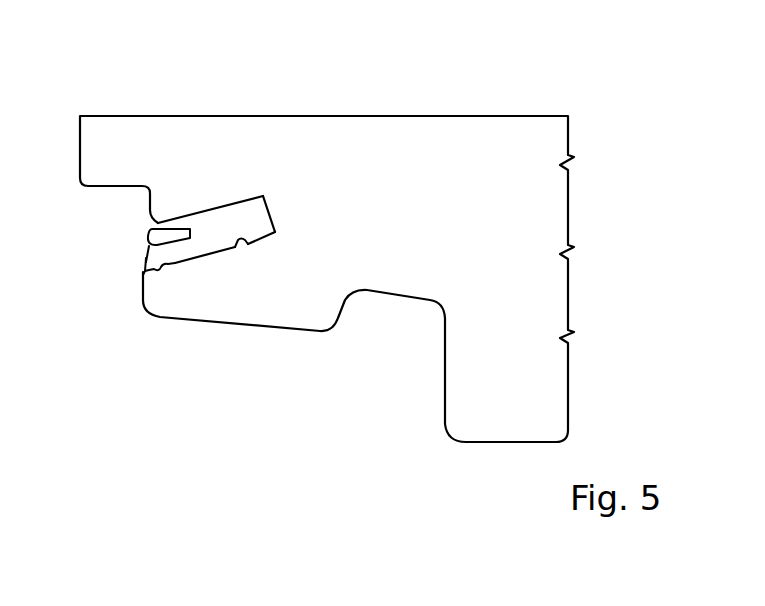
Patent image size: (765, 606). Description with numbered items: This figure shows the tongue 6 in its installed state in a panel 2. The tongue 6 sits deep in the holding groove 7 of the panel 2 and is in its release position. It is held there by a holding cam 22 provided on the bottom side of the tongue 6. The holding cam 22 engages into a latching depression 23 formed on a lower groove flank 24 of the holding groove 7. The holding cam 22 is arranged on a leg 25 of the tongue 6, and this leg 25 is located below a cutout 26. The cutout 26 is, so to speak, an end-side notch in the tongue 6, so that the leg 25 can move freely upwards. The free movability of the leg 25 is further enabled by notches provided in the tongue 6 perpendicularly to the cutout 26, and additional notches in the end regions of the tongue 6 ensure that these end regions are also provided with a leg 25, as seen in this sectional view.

The panel 2 is at (510, 132).
The tongue 6 is at (240, 212).
The holding groove 7 is at (277, 230).
The holding cam 22 is at (148, 258).
The latching depression 23 is at (168, 270).
The lower groove flank 24 is at (246, 242).
The leg 25 is at (145, 262).
The cutout 26 is at (160, 245).